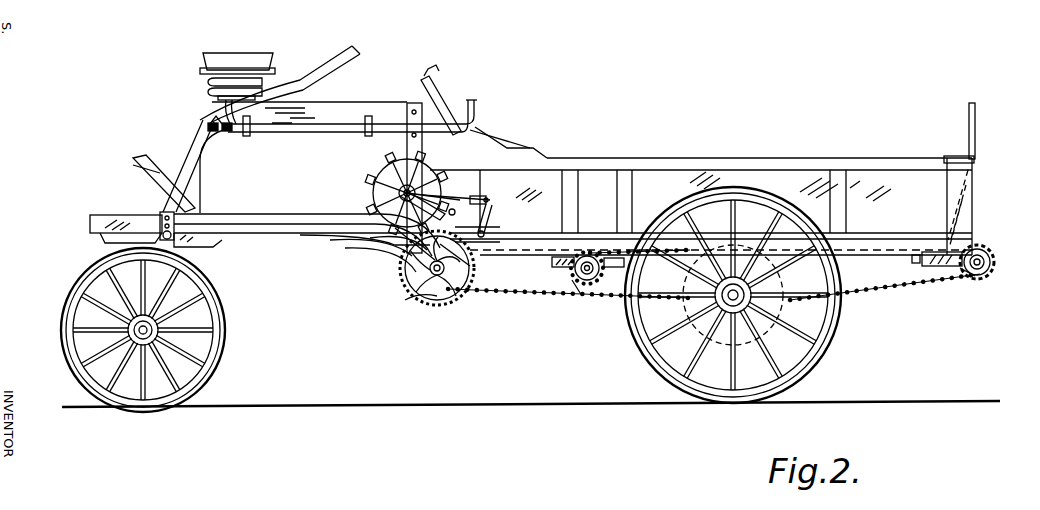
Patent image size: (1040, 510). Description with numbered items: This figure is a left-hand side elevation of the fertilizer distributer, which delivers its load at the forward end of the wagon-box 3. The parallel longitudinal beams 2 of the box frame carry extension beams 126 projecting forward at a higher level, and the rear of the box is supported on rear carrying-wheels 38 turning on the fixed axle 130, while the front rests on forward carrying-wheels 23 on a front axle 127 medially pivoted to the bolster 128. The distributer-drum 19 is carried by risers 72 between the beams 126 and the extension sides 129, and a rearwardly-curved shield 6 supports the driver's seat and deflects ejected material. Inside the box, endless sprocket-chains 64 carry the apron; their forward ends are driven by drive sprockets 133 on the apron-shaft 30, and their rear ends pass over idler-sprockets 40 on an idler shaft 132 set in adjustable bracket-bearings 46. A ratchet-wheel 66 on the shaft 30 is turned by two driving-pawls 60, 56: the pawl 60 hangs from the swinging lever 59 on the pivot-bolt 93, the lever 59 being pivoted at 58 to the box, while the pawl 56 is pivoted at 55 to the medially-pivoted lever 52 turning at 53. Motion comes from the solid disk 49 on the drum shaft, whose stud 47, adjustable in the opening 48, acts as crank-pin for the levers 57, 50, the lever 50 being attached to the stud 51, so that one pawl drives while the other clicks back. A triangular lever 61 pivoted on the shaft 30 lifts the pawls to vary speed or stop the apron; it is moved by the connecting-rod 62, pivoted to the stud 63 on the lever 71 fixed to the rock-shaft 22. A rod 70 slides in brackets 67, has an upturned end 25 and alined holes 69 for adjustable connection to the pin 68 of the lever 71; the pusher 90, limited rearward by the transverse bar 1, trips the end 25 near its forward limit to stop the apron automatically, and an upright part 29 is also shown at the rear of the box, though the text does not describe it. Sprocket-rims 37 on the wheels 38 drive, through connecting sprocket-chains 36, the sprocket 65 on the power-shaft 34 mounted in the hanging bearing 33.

The transverse bar 1 is at (976, 162).
The longitudinal beams 2 is at (872, 247).
The wagon-box 3 is at (682, 173).
The shield 6 is at (300, 86).
The distributer-drum 19 is at (375, 176).
The rock-shaft 22 is at (100, 236).
The forward carrying-wheels 23 is at (70, 303).
The upturned end of rod 25 is at (478, 104).
The rear post 29 is at (975, 108).
The apron-shaft 30 is at (457, 292).
The hanging bearing 33 is at (572, 262).
The power-shaft 34 is at (575, 285).
The connecting sprocket-chains 36 is at (668, 318).
The sprocket-rims 37 is at (762, 322).
The rear carrying-wheels 38 is at (836, 322).
The idler-sprockets 40 is at (988, 254).
The adjustable bracket-bearings 46 is at (925, 262).
The stud 47 is at (372, 184).
The diametrical rectangular opening 48 is at (374, 193).
The solid disk 49 is at (375, 201).
The lever 50 is at (455, 200).
The stud 51 is at (486, 200).
The medially-pivoted lever 52 is at (488, 210).
The pivot 53 is at (490, 220).
The pawl pivot 55 is at (500, 229).
The driving-pawl 56 is at (500, 243).
The lever 57 is at (358, 230).
The pivot 58 is at (388, 238).
The swinging lever 59 is at (393, 232).
The driving-pawl 60 is at (402, 242).
The triangular lever 61 is at (472, 266).
The connecting-rod 62 is at (270, 233).
The stud 63 is at (160, 213).
The endless sprocket-chains 64 is at (528, 292).
The sprocket 65 is at (593, 272).
The ratchet-wheel 66 is at (410, 298).
The brackets 67 is at (245, 128).
The pin 68 is at (206, 124).
The alined holes 69 is at (226, 133).
The rod 70 is at (316, 130).
The lever 71 is at (182, 165).
The risers 72 is at (430, 147).
The pusher 90 is at (968, 155).
The pivot-bolt 93 is at (455, 208).
The extension beams 126 is at (297, 234).
The front axle 127 is at (150, 328).
The bolster 128 is at (178, 268).
The extension sides 129 is at (340, 112).
The fixed axle 130 is at (680, 345).
The idler shaft 132 is at (985, 273).
The drive sprockets 133 is at (395, 280).